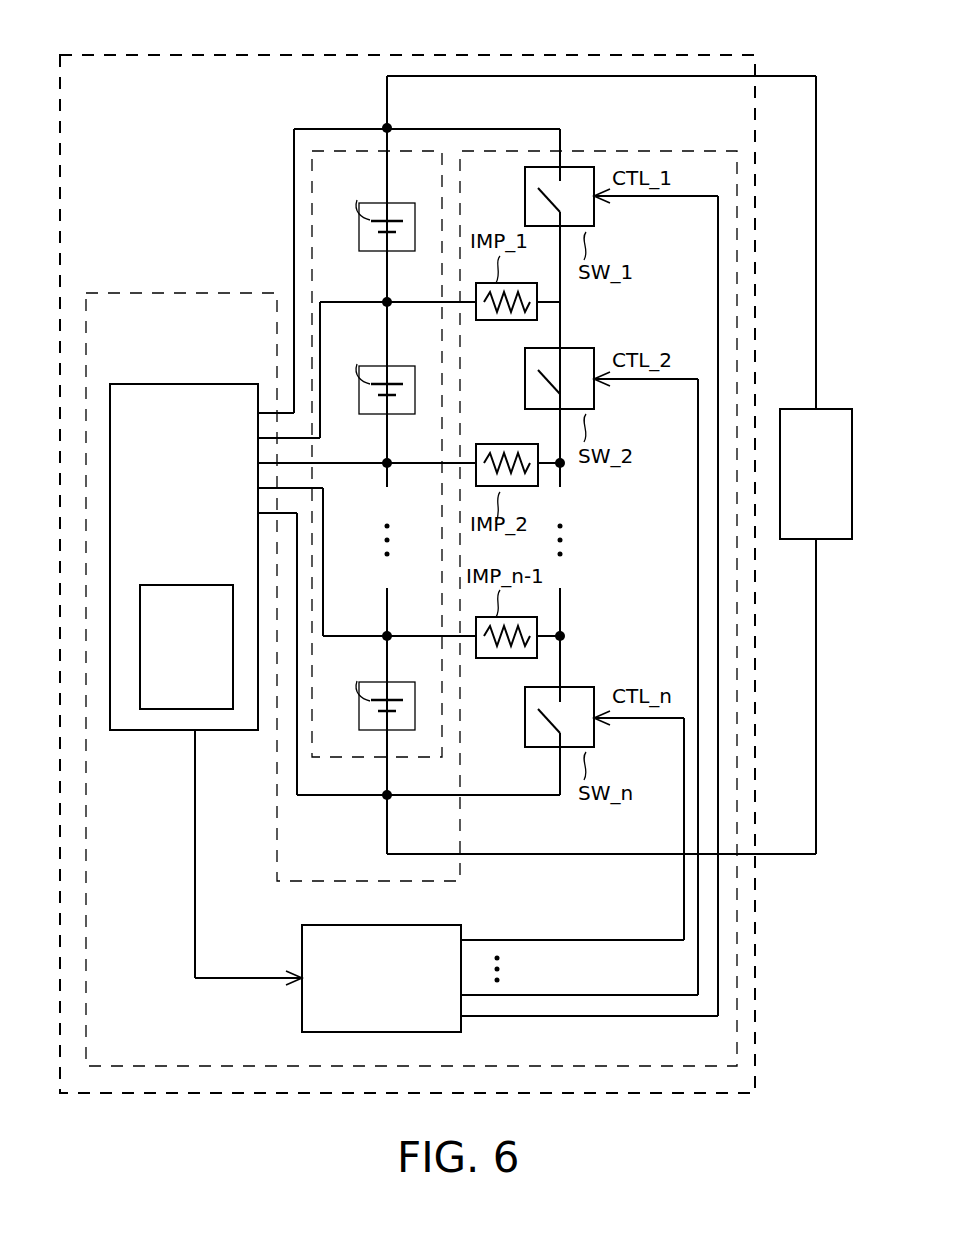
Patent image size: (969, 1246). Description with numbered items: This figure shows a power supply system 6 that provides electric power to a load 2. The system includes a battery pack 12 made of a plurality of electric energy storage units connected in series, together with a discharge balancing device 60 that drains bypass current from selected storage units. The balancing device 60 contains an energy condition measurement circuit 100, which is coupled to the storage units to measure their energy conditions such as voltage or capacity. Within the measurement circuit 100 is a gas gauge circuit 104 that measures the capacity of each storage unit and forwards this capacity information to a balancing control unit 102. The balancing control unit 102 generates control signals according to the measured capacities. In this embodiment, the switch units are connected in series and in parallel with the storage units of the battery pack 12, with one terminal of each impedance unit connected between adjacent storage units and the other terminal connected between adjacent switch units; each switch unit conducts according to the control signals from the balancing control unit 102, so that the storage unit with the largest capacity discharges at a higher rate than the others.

The power supply system 6 is at (154, 55).
The battery pack 12 is at (343, 150).
The balancing device 60 is at (148, 293).
The energy condition measurement circuit 100 is at (182, 384).
The gas gauge circuit 104 is at (184, 585).
The balancing control unit 102 is at (422, 925).
The load 2 is at (836, 409).